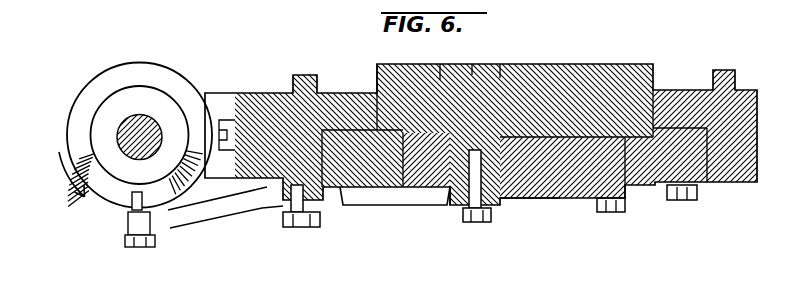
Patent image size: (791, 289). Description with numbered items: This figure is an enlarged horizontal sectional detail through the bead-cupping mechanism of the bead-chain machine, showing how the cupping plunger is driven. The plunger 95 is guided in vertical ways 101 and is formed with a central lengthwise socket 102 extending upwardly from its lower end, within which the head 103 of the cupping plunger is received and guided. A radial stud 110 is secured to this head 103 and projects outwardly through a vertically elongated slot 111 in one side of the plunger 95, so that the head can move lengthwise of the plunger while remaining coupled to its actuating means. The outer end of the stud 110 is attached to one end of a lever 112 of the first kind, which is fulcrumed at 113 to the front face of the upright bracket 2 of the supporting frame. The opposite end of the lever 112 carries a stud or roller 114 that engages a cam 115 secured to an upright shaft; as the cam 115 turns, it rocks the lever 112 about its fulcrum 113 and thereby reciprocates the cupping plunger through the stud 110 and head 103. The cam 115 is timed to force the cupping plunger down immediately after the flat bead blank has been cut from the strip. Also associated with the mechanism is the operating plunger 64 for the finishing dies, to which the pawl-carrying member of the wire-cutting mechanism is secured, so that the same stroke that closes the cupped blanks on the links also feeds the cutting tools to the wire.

The upright bracket 2 is at (325, 93).
The operating plunger 64 is at (596, 64).
The plunger 95 is at (472, 64).
The vertical ways 101 is at (437, 64).
The central lengthwise socket 102 is at (520, 203).
The head 103 is at (500, 64).
The radial stud 110 is at (477, 222).
The vertically elongated slot 111 is at (452, 206).
The lever 112 is at (377, 206).
The fulcrum 113 is at (302, 227).
The stud or roller 114 is at (115, 208).
The cam 115 is at (77, 132).